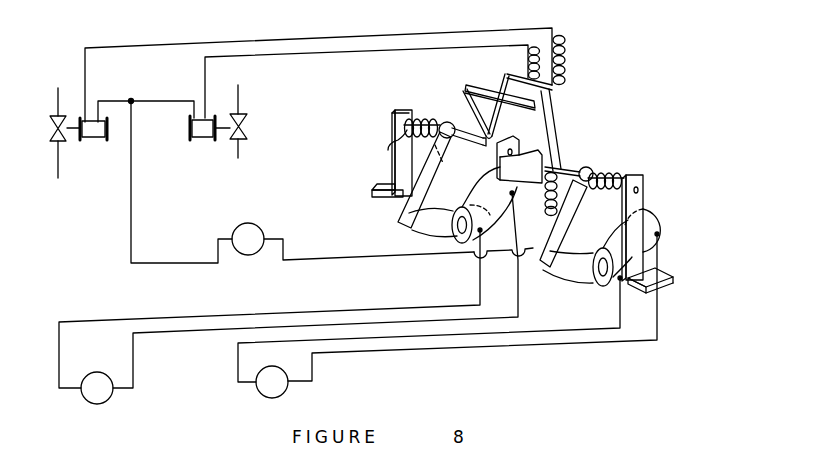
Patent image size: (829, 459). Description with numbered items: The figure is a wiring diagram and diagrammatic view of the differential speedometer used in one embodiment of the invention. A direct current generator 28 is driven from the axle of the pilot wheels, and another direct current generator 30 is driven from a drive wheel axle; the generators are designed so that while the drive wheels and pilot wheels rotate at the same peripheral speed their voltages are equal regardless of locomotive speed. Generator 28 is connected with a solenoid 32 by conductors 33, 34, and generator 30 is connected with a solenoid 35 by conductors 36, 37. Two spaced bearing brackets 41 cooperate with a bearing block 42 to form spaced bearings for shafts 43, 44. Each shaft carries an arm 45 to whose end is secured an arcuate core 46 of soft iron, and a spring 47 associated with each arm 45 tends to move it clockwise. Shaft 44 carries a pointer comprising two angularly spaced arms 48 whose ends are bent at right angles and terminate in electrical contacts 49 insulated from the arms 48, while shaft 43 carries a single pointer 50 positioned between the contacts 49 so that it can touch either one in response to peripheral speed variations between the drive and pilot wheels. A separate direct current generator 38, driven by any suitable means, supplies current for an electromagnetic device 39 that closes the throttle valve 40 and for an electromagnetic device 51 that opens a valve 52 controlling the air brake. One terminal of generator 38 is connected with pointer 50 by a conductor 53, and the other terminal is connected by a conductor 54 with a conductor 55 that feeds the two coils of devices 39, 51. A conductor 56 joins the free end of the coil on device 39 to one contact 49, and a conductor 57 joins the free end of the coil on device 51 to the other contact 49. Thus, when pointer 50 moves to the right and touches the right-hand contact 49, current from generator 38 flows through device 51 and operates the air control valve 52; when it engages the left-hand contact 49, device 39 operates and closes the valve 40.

The direct current generator 28 is at (97, 371).
The direct current generator 30 is at (275, 367).
The solenoid 32 is at (490, 190).
The conductor 33 is at (387, 308).
The conductor 34 is at (518, 283).
The solenoid 35 is at (657, 218).
The conductor 36 is at (620, 310).
The conductor 37 is at (662, 322).
The direct current generator 38 is at (257, 224).
The electromagnetic device 39 is at (204, 133).
The throttle valve 40 is at (246, 128).
The bearing bracket 41 is at (392, 160).
The bearing block 42 is at (525, 158).
The shaft 43 is at (575, 168).
The shaft 44 is at (472, 152).
The arm 45 is at (420, 196).
The arcuate core 46 is at (437, 228).
The spring 47 is at (422, 120).
The arm 48 is at (505, 75).
The electrical contact 49 is at (526, 110).
The pointer 50 is at (558, 118).
The electromagnetic device 51 is at (97, 135).
The valve 52 is at (50, 128).
The conductor 53 is at (372, 255).
The conductor 54 is at (137, 207).
The conductor 55 is at (172, 100).
The conductor 56 is at (385, 52).
The conductor 57 is at (305, 39).